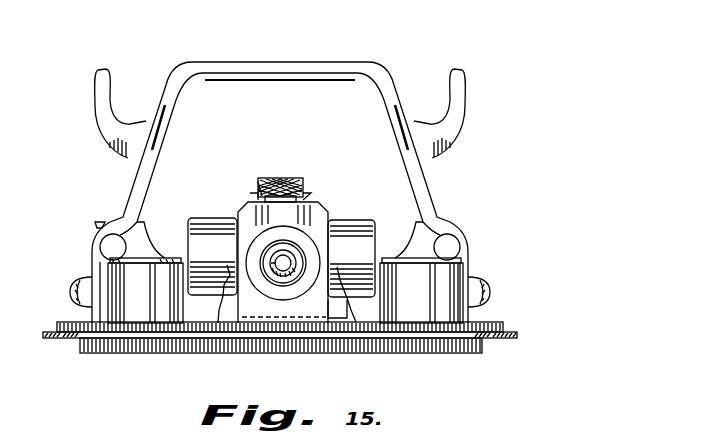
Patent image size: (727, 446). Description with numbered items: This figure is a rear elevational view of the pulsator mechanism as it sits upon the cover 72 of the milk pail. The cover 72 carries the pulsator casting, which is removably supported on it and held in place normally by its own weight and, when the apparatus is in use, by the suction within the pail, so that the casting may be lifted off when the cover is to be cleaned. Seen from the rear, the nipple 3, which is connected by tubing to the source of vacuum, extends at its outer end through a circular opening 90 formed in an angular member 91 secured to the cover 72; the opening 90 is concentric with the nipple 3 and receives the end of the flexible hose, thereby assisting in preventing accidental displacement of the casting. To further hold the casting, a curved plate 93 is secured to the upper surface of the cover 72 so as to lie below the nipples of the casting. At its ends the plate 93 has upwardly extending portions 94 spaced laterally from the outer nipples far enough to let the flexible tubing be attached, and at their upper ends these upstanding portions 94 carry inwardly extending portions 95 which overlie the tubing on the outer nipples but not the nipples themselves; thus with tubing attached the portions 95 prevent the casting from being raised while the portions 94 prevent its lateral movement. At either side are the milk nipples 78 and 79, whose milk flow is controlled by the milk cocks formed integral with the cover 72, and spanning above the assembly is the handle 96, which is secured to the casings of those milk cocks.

The nipple 3 is at (295, 261).
The cover 72 is at (160, 350).
The milk nipple 78 is at (73, 292).
The milk nipple 79 is at (493, 289).
The circular opening 90 is at (310, 242).
The angular member 91 is at (268, 319).
The curved plate 93 is at (333, 320).
The upwardly extending portions 94 is at (218, 312).
The inwardly extending portions 95 is at (227, 264).
The handle 96 is at (288, 61).